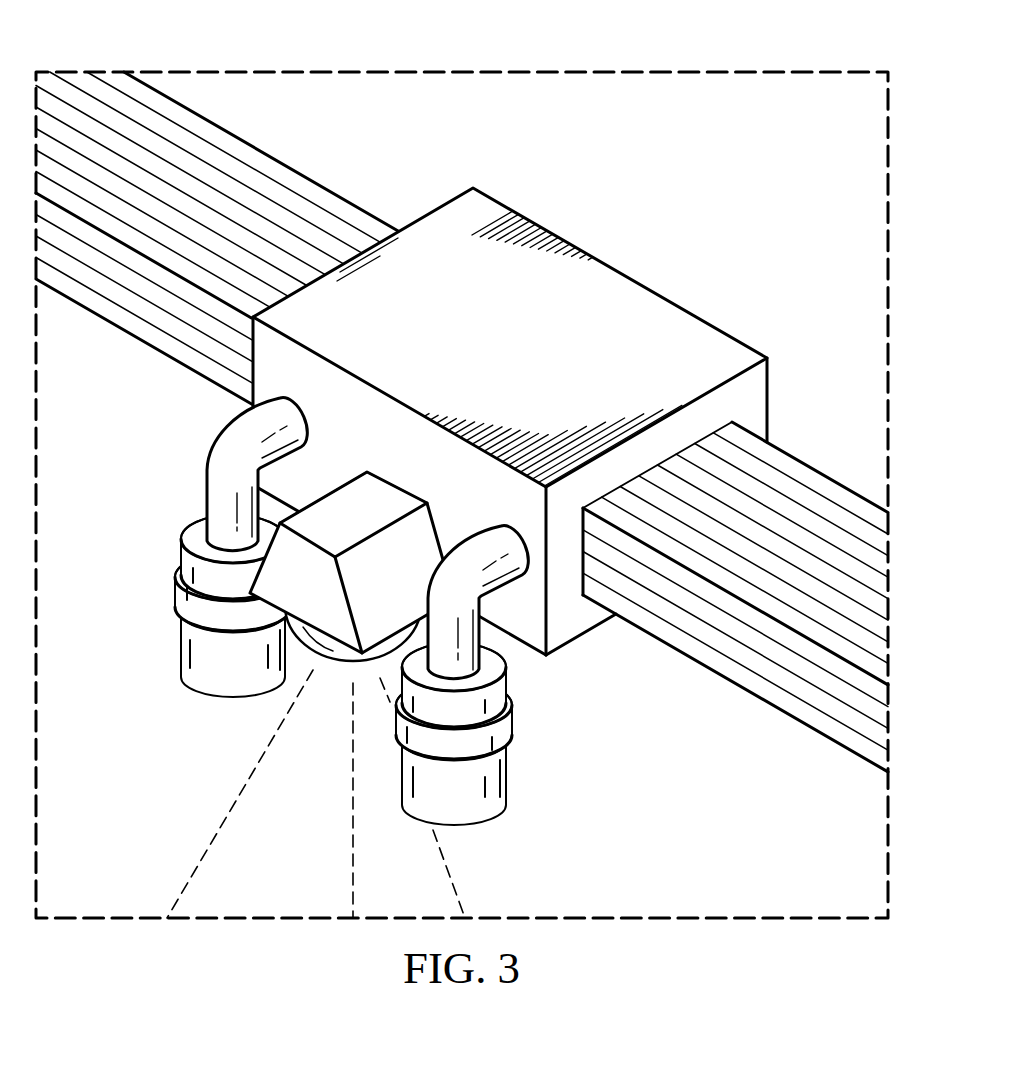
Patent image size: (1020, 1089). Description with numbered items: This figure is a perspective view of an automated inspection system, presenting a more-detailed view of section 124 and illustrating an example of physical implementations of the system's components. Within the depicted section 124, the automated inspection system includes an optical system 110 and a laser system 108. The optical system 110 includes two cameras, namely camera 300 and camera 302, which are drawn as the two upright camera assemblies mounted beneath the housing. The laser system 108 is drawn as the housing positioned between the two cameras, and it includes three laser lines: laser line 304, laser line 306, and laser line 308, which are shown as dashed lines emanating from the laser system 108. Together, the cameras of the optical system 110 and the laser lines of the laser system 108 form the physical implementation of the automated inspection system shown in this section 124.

The section 124 is at (659, 70).
The optical system 110 is at (172, 504).
The laser system 108 is at (358, 494).
The camera 300 is at (176, 590).
The camera 302 is at (513, 716).
The laser line 304 is at (450, 874).
The laser line 306 is at (352, 807).
The laser line 308 is at (239, 797).